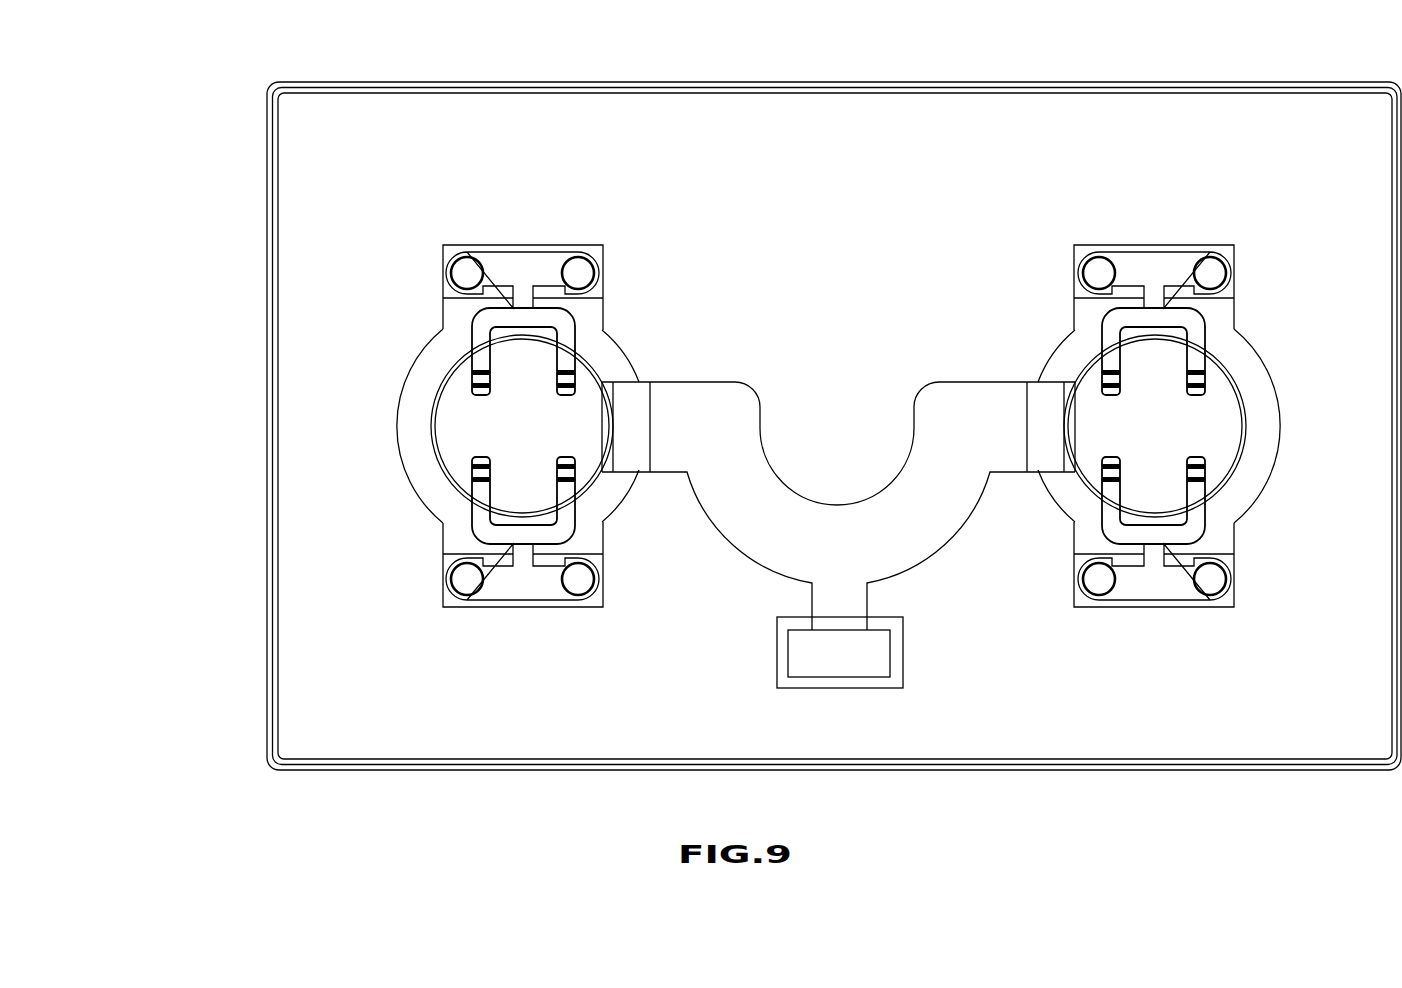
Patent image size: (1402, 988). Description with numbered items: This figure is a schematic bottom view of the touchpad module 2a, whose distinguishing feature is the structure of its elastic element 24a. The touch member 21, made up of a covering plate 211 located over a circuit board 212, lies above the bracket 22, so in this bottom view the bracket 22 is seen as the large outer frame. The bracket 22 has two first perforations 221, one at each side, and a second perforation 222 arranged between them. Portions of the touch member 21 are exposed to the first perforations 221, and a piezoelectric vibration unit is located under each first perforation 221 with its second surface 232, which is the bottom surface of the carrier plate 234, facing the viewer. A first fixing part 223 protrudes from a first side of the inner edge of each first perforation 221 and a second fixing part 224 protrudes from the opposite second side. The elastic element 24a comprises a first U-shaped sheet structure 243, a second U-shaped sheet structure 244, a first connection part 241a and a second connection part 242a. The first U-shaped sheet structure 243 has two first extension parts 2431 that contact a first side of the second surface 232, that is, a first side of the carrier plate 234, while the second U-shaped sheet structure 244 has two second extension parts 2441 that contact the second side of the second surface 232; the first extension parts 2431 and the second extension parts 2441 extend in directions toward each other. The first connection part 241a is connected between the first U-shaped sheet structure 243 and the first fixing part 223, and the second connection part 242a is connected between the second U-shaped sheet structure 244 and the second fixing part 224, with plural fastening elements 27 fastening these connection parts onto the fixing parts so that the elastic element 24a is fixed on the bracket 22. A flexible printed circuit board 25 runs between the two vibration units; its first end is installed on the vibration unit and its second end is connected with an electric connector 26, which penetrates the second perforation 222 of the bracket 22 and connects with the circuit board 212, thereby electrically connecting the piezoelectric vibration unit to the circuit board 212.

The touchpad module 2a is at (1334, 22).
The touch member 21 is at (552, 33).
The covering plate 211 is at (604, 82).
The circuit board 212 is at (510, 90).
The bracket 22 is at (862, 112).
The first perforation 221 is at (423, 407).
The second perforation 222 is at (893, 658).
The first fixing part 223 is at (480, 607).
The second fixing part 224 is at (553, 248).
The second surface 232 is at (588, 397).
The carrier plate 234 is at (593, 426).
The elastic element 24a is at (118, 135).
The first connection part 241a is at (533, 590).
The second connection part 242a is at (525, 262).
The first U-shaped sheet structure 243 is at (524, 550).
The first extension part 2431 is at (480, 492).
The second U-shaped sheet structure 244 is at (525, 340).
The second extension part 2441 is at (480, 350).
The flexible printed circuit board 25 is at (740, 410).
The electric connector 26 is at (837, 667).
The fastening element 27 is at (587, 275).